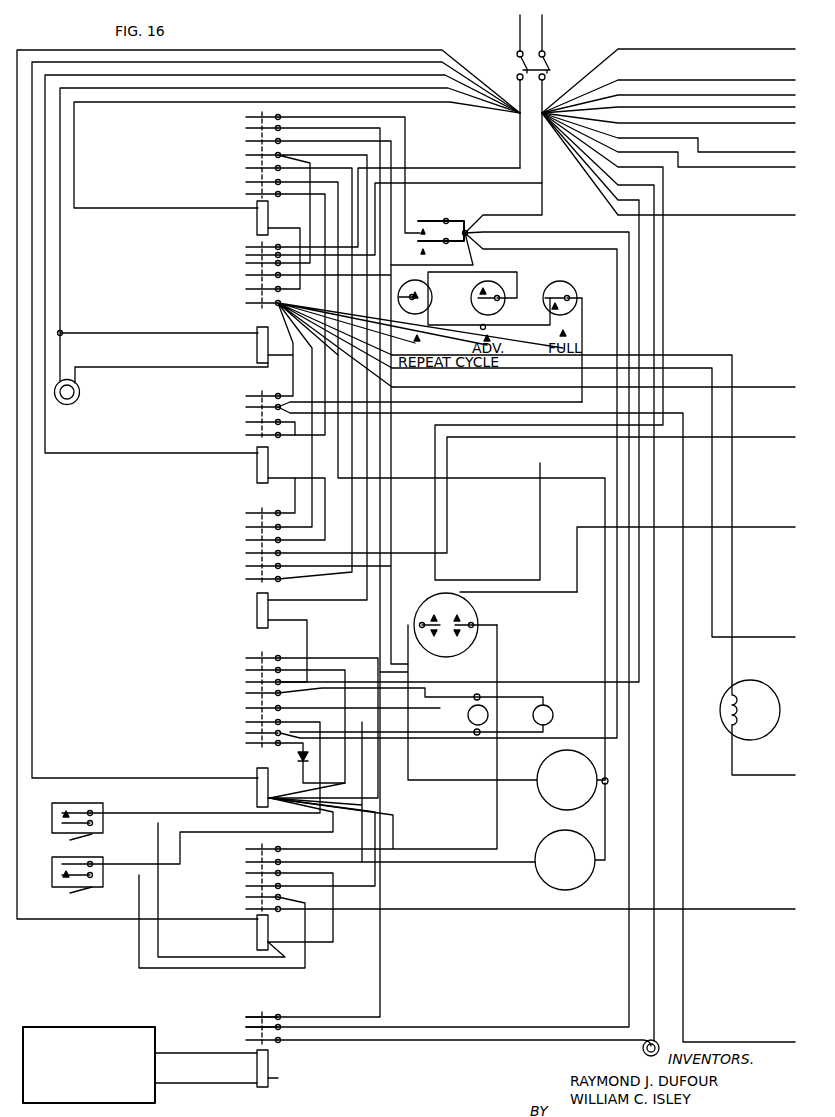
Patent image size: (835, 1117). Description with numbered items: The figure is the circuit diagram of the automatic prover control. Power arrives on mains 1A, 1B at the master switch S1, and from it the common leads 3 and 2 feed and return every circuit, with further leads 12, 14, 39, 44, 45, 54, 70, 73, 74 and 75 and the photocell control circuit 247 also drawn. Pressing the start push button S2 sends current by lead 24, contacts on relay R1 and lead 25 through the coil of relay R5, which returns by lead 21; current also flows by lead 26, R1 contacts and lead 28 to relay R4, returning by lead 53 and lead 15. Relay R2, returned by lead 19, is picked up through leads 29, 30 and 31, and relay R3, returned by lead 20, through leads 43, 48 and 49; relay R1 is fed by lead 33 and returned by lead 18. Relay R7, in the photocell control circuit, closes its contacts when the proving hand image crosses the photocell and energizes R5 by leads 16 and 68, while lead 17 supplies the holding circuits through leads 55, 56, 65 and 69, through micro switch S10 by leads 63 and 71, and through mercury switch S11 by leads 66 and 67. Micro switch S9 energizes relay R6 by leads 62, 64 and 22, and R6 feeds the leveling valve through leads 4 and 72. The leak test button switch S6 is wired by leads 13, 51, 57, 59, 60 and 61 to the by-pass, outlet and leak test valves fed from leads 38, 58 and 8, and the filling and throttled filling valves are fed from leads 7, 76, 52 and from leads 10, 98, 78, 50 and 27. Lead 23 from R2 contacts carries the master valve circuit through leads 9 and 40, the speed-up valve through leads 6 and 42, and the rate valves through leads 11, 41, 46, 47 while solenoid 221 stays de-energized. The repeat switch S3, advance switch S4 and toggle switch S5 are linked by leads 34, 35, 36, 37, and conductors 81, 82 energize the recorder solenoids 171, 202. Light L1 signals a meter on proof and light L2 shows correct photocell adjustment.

The main 1A is at (519, 29).
The main 1B is at (553, 36).
The lead 2 is at (515, 84).
The lead 3 is at (511, 222).
The lead 4 is at (752, 48).
The lead 6 is at (752, 80).
The lead 7 is at (752, 95).
The lead 8 is at (752, 107).
The lead 9 is at (752, 122).
The lead 10 is at (501, 170).
The lead 11 is at (752, 149).
The lead 12 is at (752, 165).
The lead 13 is at (663, 230).
The lead 14 is at (654, 248).
The lead 15 is at (639, 265).
The lead 16 is at (519, 242).
The lead 17 is at (519, 259).
The lead 18 is at (447, 98).
The lead 19 is at (421, 98).
The lead 20 is at (358, 78).
The lead 21 is at (396, 54).
The lead 22 is at (428, 54).
The lead 23 is at (458, 272).
The lead 24 is at (327, 120).
The lead 25 is at (376, 128).
The lead 26 is at (391, 152).
The lead 27 is at (308, 238).
The lead 28 is at (344, 150).
The lead 29 is at (400, 177).
The lead 30 is at (320, 205).
The lead 31 is at (320, 216).
The lead 33 is at (300, 270).
The lead 34 is at (300, 306).
The lead 35 is at (440, 285).
The lead 36 is at (428, 333).
The lead 37 is at (506, 333).
The lead 38 is at (407, 482).
The lead 39 is at (706, 359).
The lead 40 is at (708, 389).
The lead 41 is at (295, 378).
The lead 42 is at (678, 384).
The lead 43 is at (316, 475).
The lead 44 is at (120, 372).
The lead 45 is at (60, 348).
The lead 46 is at (582, 402).
The lead 47 is at (686, 574).
The lead 48 is at (292, 460).
The lead 49 is at (330, 523).
The lead 50 is at (416, 560).
The lead 51 is at (465, 653).
The lead 52 is at (392, 572).
The lead 53 is at (304, 627).
The lead 54 is at (774, 780).
The lead 55 is at (334, 662).
The lead 56 is at (345, 672).
The lead 57 is at (359, 712).
The lead 58 is at (434, 873).
The lead 59 is at (444, 785).
The lead 60 is at (774, 532).
The lead 61 is at (434, 853).
The lead 62 is at (202, 822).
The lead 63 is at (202, 838).
The lead 64 is at (156, 848).
The lead 65 is at (355, 835).
The lead 66 is at (295, 808).
The lead 67 is at (288, 749).
The lead 68 is at (342, 1022).
The lead 69 is at (361, 879).
The lead 70 is at (320, 941).
The lead 71 is at (206, 973).
The lead 72 is at (430, 913).
The lead 73 is at (427, 1047).
The lead 74 is at (197, 1057).
The lead 75 is at (197, 1088).
The lead 76 is at (774, 469).
The lead 78 is at (774, 442).
The conductor 81 is at (462, 738).
The conductor 82 is at (468, 702).
The lead 98 is at (748, 214).
The solenoid 171 is at (491, 727).
The solenoid 202 is at (553, 717).
The solenoid 221 is at (760, 675).
The photocell control circuit 247 is at (104, 1024).
The master switch S1 is at (547, 62).
The start push button S2 is at (443, 237).
The repeat switch S3 is at (409, 310).
The push button switch S4 is at (489, 306).
The toggle switch S5 is at (552, 308).
The leak test button switch S6 is at (480, 620).
The micro switch S9 is at (88, 802).
The micro switch S10 is at (70, 847).
The mercury switch S11 is at (300, 766).
The relay R1 is at (257, 225).
The relay R2 is at (257, 348).
The relay R3 is at (257, 468).
The relay R4 is at (257, 606).
The relay R5 is at (257, 795).
The relay R6 is at (257, 940).
The relay R7 is at (265, 1049).
The light L1 is at (80, 392).
The light L2 is at (642, 1049).